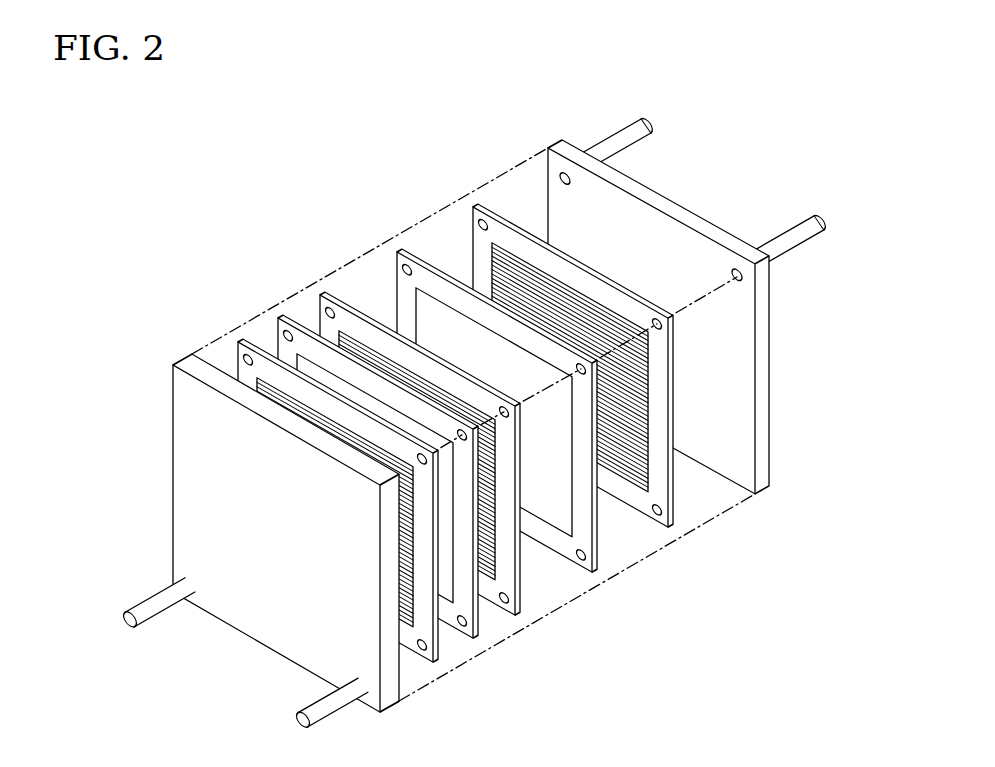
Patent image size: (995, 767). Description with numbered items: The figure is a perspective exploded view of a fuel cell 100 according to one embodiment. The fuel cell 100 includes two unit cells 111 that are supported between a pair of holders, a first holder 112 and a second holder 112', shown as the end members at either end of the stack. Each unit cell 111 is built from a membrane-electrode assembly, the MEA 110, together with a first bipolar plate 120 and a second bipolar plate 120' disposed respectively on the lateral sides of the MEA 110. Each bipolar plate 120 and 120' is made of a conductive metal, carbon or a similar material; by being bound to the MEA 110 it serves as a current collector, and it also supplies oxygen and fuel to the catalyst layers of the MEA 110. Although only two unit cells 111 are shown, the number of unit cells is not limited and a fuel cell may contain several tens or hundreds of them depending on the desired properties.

The fuel cell 100 is at (215, 238).
The membrane-electrode assembly 110 is at (397, 283).
The unit cell 111 is at (405, 426).
The first holder 112 is at (262, 536).
The second holder 112' is at (701, 309).
The first bipolar plate 120 is at (405, 421).
The second bipolar plate 120' is at (534, 345).